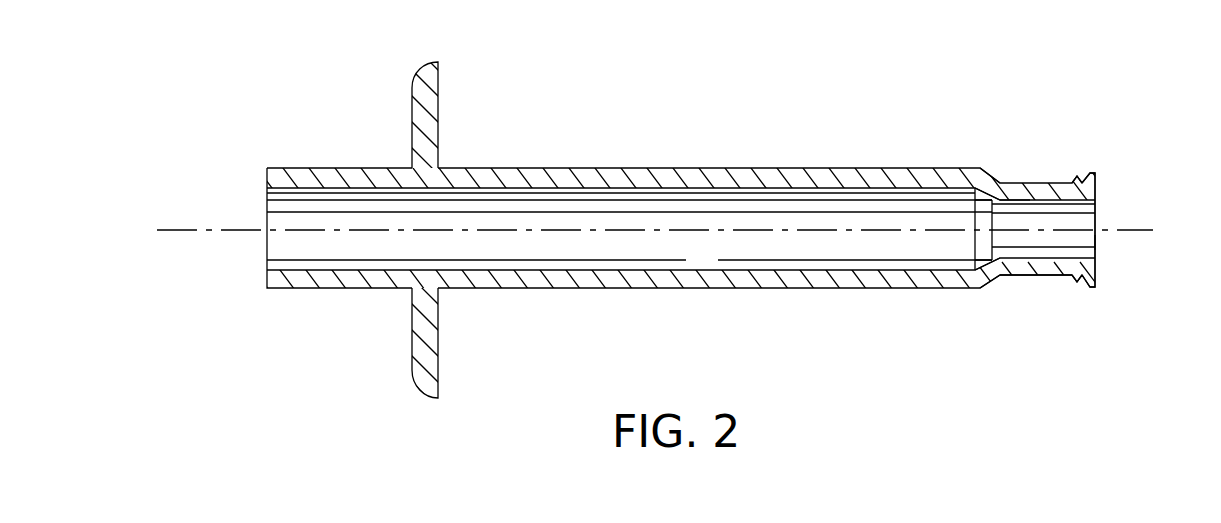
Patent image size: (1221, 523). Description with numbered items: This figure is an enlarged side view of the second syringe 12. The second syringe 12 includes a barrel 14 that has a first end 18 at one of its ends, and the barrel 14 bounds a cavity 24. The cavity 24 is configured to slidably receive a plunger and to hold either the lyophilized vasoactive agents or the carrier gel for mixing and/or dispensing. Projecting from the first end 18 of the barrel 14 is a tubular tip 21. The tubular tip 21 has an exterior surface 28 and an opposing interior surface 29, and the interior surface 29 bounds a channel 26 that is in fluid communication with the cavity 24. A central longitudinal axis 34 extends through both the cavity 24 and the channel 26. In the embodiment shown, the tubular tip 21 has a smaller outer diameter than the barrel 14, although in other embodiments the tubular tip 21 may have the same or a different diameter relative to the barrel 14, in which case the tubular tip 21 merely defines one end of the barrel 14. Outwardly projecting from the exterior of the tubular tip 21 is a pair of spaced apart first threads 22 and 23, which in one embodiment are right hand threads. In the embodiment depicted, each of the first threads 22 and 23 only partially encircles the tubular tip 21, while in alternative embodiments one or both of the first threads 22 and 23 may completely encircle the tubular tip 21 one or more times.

The second syringe 12 is at (677, 153).
The barrel 14 is at (764, 290).
The first end 18 is at (975, 292).
The tubular tip 21 is at (1017, 332).
The first thread 22 is at (1075, 176).
The first thread 23 is at (1094, 170).
The cavity 24 is at (689, 262).
The channel 26 is at (1076, 242).
The exterior surface 28 is at (1033, 277).
The interior surface 29 is at (1034, 202).
The central longitudinal axis 34 is at (175, 230).